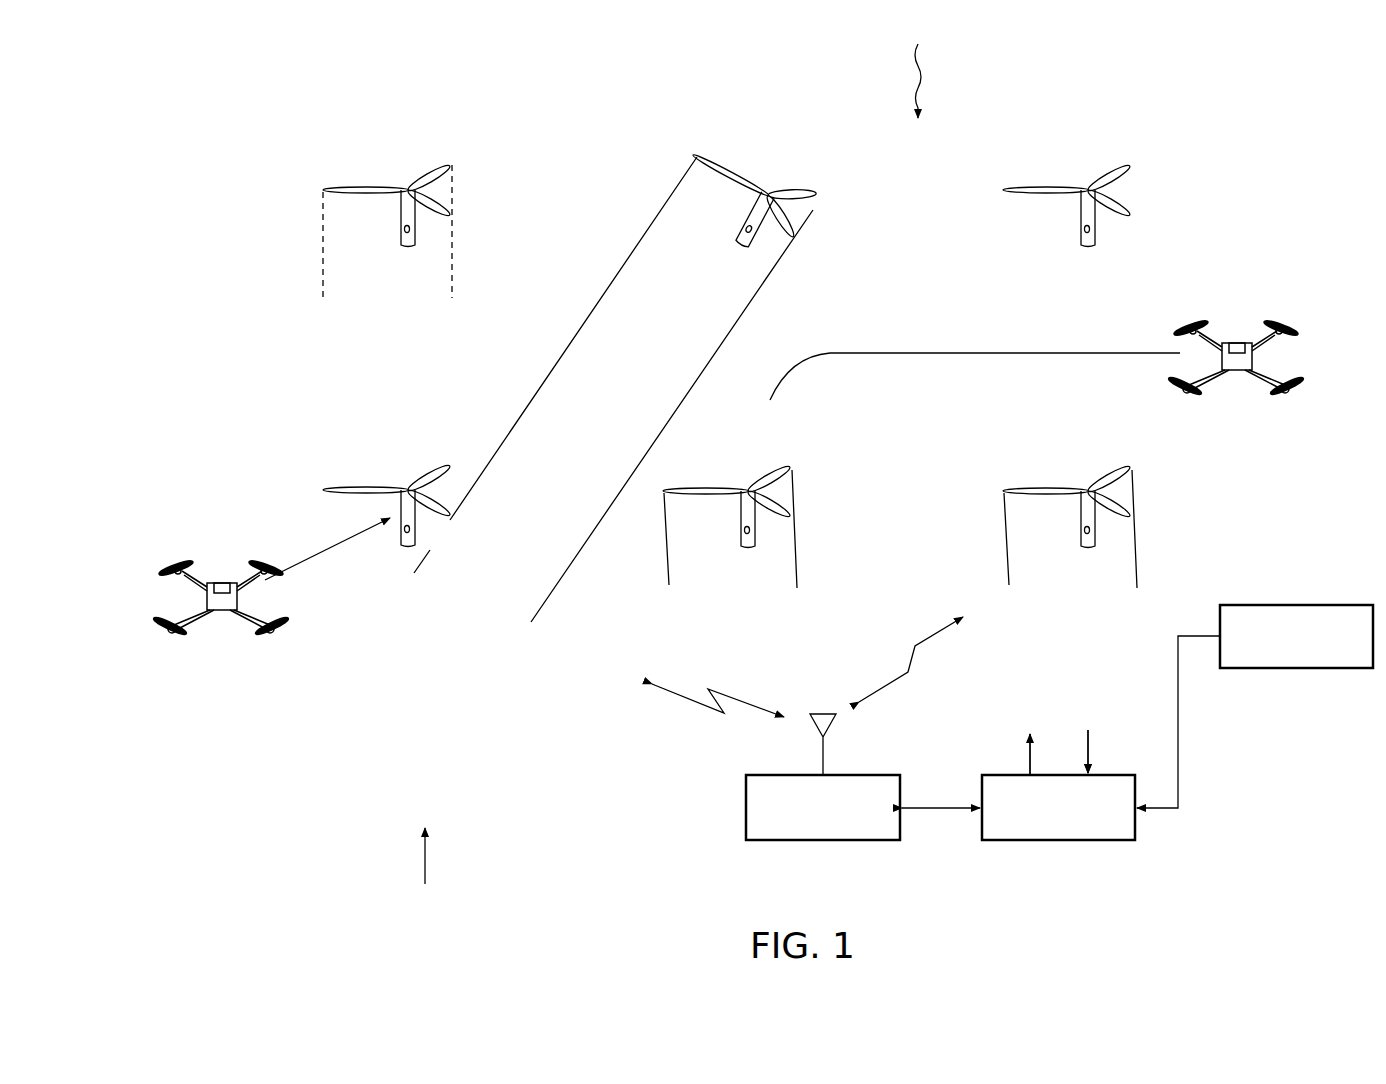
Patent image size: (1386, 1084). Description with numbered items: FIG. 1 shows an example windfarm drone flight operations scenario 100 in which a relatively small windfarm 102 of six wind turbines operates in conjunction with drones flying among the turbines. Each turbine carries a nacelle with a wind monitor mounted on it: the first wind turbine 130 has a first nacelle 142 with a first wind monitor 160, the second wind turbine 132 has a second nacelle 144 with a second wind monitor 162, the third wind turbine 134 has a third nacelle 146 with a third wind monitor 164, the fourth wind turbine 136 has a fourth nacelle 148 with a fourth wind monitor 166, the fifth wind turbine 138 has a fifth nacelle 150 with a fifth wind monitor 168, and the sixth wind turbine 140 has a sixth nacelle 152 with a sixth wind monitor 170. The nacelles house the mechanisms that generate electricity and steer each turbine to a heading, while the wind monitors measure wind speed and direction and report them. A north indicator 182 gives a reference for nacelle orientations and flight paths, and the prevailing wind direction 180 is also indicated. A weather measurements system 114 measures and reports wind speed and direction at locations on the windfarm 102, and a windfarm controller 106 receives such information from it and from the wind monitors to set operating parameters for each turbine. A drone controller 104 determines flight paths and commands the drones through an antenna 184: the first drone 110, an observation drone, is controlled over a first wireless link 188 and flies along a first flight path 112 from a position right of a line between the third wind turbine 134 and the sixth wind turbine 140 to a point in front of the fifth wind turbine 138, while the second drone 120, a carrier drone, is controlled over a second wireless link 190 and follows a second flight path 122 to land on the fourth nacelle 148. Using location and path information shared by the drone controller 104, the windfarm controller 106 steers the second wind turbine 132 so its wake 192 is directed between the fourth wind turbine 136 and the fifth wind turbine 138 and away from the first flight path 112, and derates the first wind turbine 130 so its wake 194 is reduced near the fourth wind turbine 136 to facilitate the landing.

The windfarm drone flight operations scenario 100 is at (1273, 845).
The windfarm 102 is at (229, 143).
The drone controller 104 is at (826, 840).
The windfarm controller 106 is at (1018, 840).
The first drone 110 is at (1248, 307).
The first flight path 112 is at (938, 352).
The weather measurements system 114 is at (1292, 668).
The second drone 120 is at (207, 557).
The second flight path 122 is at (318, 554).
The first wind turbine 130 is at (386, 216).
The second wind turbine 132 is at (765, 206).
The third wind turbine 134 is at (1066, 216).
The fourth wind turbine 136 is at (405, 511).
The fifth wind turbine 138 is at (748, 519).
The sixth wind turbine 140 is at (1068, 518).
The first nacelle 142 is at (415, 238).
The second nacelle 144 is at (754, 220).
The third nacelle 146 is at (1095, 238).
The fourth nacelle 148 is at (431, 547).
The fifth nacelle 150 is at (757, 540).
The sixth nacelle 152 is at (1097, 540).
The first wind monitor 160 is at (402, 231).
The second wind monitor 162 is at (749, 229).
The third wind monitor 164 is at (1082, 231).
The fourth wind monitor 166 is at (402, 533).
The fifth wind monitor 168 is at (742, 533).
The sixth wind monitor 170 is at (1082, 533).
The wind direction 180 is at (915, 92).
The north indicator 182 is at (424, 860).
The antenna 184 is at (835, 727).
The first wireless link 188 is at (928, 668).
The second wireless link 190 is at (690, 700).
The wake 192 is at (567, 348).
The wake 194 is at (453, 200).